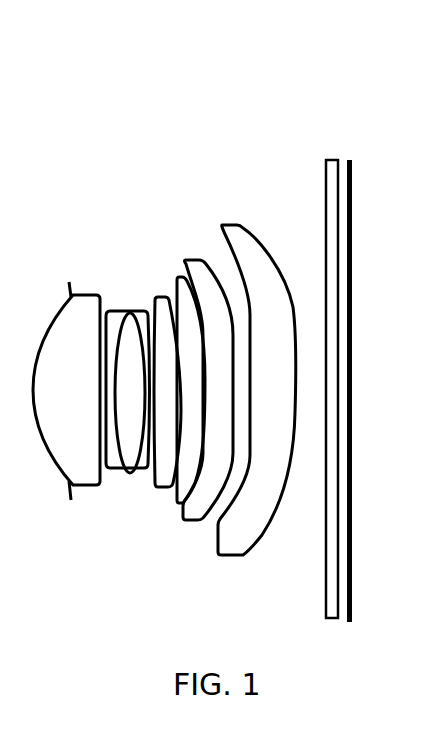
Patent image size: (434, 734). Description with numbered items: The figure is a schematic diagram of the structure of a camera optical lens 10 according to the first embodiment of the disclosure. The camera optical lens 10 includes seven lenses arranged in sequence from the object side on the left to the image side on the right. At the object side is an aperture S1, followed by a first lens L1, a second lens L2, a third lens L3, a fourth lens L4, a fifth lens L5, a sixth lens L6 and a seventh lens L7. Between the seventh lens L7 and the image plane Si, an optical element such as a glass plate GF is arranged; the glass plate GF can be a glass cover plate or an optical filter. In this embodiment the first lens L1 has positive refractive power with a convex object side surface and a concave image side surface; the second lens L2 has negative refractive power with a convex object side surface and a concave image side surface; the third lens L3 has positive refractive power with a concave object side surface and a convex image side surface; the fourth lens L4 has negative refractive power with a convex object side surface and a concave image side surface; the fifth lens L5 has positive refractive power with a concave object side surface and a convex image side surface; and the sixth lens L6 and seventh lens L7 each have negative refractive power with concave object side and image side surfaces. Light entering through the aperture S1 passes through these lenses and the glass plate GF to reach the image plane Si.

The camera optical lens 10 is at (215, 61).
The aperture S1 is at (54, 391).
The first lens L1 is at (66, 377).
The second lens L2 is at (128, 379).
The third lens L3 is at (133, 382).
The fourth lens L4 is at (163, 381).
The fifth lens L5 is at (184, 379).
The sixth lens L6 is at (208, 378).
The seventh lens L7 is at (257, 377).
The glass plate GF is at (326, 374).
The image plane Si is at (346, 374).